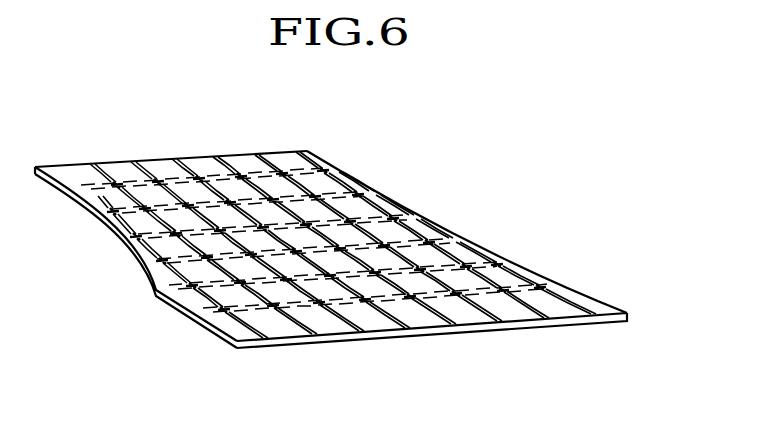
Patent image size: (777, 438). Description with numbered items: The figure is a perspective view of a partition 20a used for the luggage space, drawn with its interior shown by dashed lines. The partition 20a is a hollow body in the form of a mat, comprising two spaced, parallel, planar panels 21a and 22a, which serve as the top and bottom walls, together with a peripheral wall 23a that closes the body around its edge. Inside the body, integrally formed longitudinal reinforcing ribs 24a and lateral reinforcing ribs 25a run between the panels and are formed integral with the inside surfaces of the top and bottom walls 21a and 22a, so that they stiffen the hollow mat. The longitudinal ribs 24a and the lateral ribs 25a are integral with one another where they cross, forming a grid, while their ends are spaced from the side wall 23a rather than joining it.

The partition 20a is at (331, 236).
The planar panel 21a is at (381, 201).
The planar panel 22a is at (270, 349).
The peripheral wall 23a is at (181, 312).
The longitudinal reinforcing rib 24a is at (434, 314).
The lateral reinforcing rib 25a is at (508, 283).